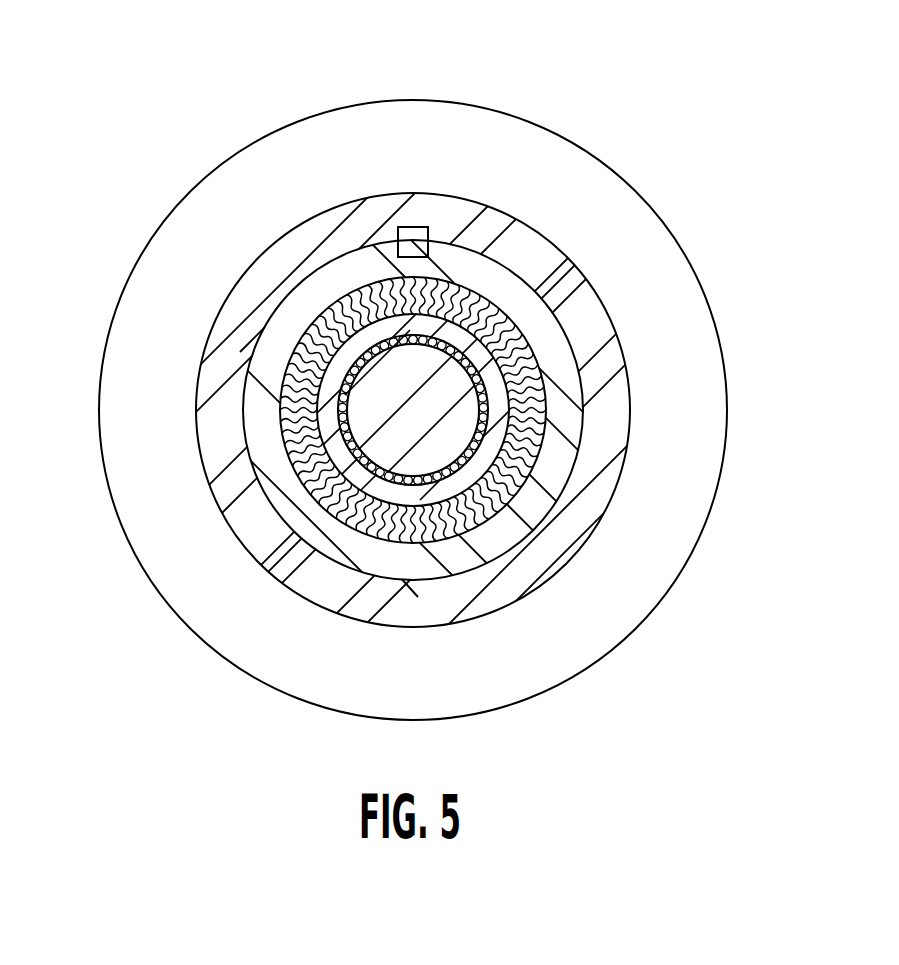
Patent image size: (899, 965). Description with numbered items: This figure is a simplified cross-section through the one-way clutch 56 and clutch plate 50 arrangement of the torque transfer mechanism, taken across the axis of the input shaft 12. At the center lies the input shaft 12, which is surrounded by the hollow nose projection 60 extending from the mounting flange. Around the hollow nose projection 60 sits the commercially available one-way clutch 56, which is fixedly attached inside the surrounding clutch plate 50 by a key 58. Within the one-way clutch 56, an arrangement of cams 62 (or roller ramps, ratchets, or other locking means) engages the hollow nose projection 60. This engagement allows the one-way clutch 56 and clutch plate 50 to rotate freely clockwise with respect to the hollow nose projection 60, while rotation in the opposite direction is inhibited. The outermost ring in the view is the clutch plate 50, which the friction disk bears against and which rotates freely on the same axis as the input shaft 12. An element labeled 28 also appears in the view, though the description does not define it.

The input shaft 12 is at (385, 412).
The inner conductive ring 28 is at (343, 407).
The clutch plate 50 is at (240, 272).
The one-way clutch 56 is at (573, 262).
The key 58 is at (418, 224).
The hollow nose projection 60 is at (498, 435).
The cams 62 is at (542, 377).